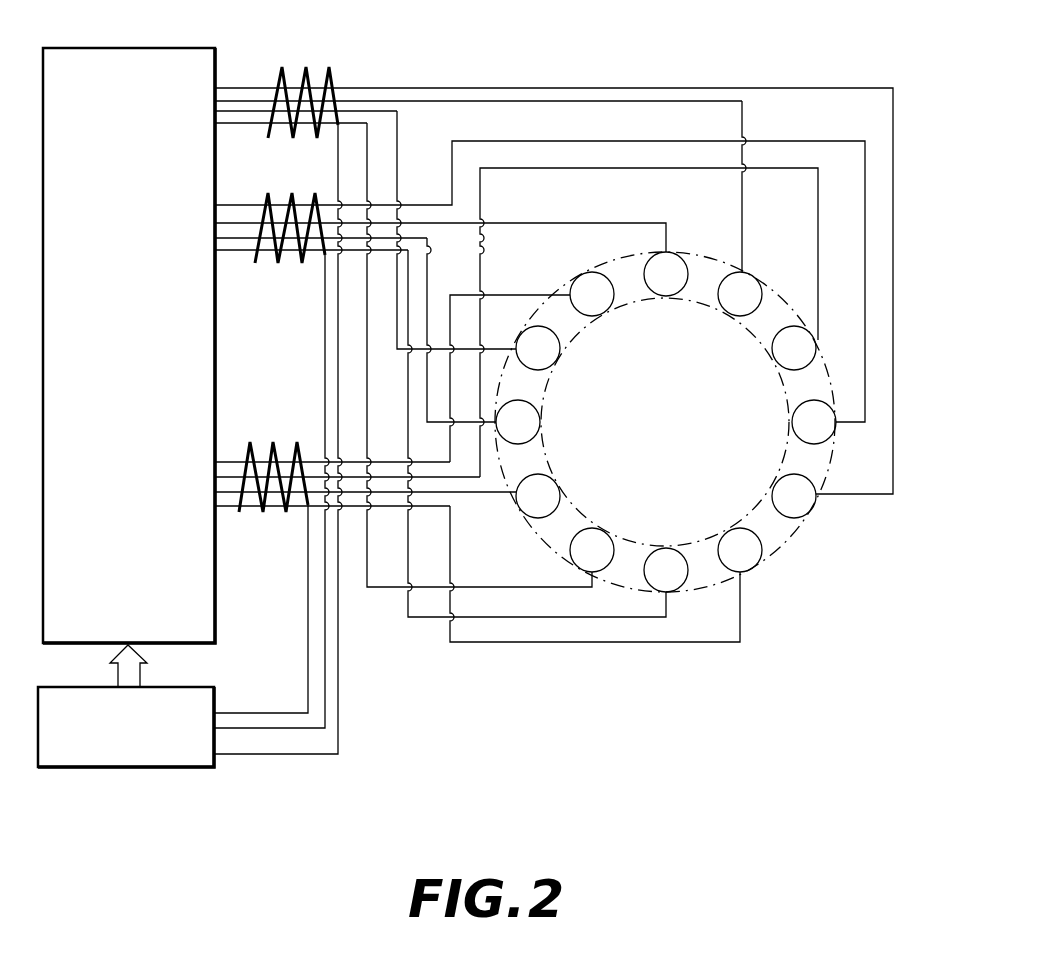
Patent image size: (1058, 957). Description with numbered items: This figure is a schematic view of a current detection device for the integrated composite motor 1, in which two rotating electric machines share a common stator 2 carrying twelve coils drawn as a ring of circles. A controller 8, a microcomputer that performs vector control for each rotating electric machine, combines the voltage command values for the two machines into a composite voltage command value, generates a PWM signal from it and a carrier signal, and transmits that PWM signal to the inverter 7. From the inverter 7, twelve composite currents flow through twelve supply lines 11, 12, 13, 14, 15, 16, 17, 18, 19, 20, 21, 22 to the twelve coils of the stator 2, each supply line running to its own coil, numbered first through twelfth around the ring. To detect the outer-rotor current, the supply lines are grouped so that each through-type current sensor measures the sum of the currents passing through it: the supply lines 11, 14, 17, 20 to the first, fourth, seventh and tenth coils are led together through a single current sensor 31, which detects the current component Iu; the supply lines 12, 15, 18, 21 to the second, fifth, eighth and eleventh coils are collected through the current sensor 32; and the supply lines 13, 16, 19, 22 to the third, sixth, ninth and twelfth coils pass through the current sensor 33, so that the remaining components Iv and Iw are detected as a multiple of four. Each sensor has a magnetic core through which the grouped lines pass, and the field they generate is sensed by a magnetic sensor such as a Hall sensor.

The integrated composite motor 1 is at (797, 563).
The common stator 2 is at (760, 512).
The inverter 7 is at (125, 55).
The controller 8 is at (150, 766).
The supply line 11 is at (668, 232).
The supply line 12 is at (748, 245).
The supply line 13 is at (766, 170).
The supply line 14 is at (770, 141).
The supply line 15 is at (762, 88).
The supply line 16 is at (571, 643).
The supply line 17 is at (577, 617).
The supply line 18 is at (492, 587).
The supply line 19 is at (463, 494).
The supply line 20 is at (430, 290).
The supply line 21 is at (497, 348).
The supply line 22 is at (503, 295).
The current sensor 31 is at (290, 193).
The current sensor 32 is at (332, 78).
The current sensor 33 is at (297, 442).